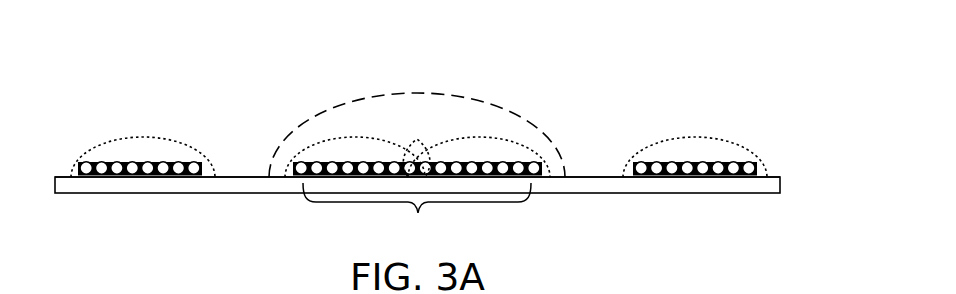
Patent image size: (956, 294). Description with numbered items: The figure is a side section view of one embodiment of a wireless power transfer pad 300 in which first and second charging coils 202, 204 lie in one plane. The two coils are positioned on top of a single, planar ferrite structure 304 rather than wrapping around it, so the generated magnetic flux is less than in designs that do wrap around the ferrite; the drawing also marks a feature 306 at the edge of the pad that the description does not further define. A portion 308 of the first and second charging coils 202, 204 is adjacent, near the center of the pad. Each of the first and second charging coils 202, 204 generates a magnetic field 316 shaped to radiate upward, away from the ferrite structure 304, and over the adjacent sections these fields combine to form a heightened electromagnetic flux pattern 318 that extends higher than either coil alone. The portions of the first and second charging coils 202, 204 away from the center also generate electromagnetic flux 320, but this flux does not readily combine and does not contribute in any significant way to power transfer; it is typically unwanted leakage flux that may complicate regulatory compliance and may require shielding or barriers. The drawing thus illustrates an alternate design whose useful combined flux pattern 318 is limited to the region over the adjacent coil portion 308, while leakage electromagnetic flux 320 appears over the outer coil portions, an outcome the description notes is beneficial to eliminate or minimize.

The wireless power transfer pad 300 is at (96, 46).
The first charging coil 202 is at (163, 164).
The second charging coil 204 is at (460, 163).
The ferrite structure 304 is at (635, 193).
The top surface of substrate 306 is at (777, 170).
The portion of the first and second charging coils 308 is at (417, 187).
The magnetic field 316 is at (443, 138).
The electromagnetic flux pattern 318 is at (480, 88).
The electromagnetic flux 320 is at (137, 136).